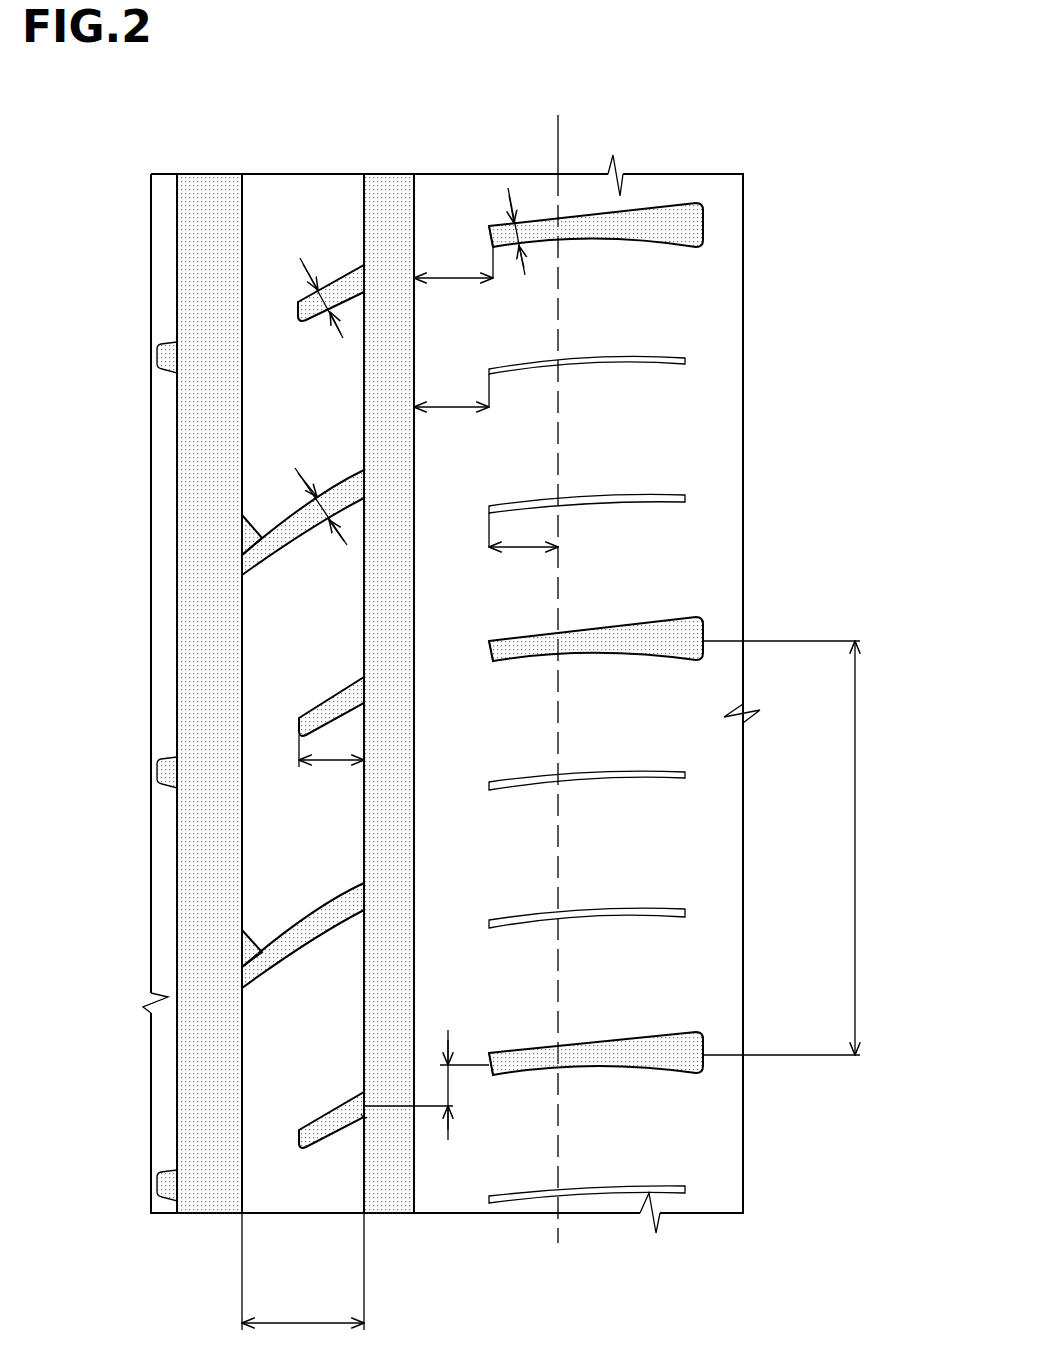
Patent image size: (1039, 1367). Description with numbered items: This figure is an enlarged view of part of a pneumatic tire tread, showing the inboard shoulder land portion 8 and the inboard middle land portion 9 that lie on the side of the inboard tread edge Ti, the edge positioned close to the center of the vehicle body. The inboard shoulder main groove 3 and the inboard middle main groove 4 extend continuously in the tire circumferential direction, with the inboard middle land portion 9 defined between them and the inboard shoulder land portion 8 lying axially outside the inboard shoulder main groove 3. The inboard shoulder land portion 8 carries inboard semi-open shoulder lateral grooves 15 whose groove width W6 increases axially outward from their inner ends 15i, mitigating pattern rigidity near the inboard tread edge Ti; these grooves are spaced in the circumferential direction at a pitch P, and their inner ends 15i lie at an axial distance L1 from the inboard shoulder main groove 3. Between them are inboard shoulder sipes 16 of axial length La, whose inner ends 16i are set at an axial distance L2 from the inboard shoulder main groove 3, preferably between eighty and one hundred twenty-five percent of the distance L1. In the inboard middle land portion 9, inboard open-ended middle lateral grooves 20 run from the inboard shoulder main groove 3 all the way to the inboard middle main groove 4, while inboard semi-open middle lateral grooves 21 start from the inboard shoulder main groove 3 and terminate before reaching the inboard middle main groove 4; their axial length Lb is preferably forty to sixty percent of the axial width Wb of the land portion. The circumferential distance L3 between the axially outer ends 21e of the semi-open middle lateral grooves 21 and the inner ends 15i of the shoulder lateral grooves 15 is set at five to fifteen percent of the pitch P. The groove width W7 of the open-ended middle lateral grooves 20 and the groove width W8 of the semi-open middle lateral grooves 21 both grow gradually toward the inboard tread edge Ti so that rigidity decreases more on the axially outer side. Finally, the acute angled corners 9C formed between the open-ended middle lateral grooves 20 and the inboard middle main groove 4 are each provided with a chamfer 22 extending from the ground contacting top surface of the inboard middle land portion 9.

The inboard shoulder main groove 3 is at (390, 230).
The inboard middle main groove 4 is at (211, 230).
The inboard shoulder land portion 8 is at (457, 210).
The inboard middle land portion 9 is at (327, 230).
The acute angled corner 9C is at (258, 933).
The inboard semi-open shoulder lateral groove 15 is at (543, 636).
The inner end of inboard semi-open shoulder lateral groove 15i is at (492, 236).
The inboard shoulder sipe 16 is at (522, 783).
The inner end of inboard shoulder sipe 16i is at (487, 372).
The inboard open-ended middle lateral groove 20 is at (303, 522).
The inboard semi-open middle lateral groove 21 is at (328, 1122).
The axially outer end of inboard semi-open middle lateral groove 21e is at (367, 1110).
The chamfer 22 is at (250, 536).
The inboard tread edge Ti is at (558, 147).
The pitch P is at (793, 848).
The axial distance L1 is at (453, 277).
The axial distance L2 is at (452, 403).
The circumferential distance L3 is at (449, 1086).
The axial length La is at (523, 548).
The axial length Lb is at (332, 762).
The groove width W6 is at (555, 237).
The groove width W7 is at (328, 500).
The groove width W8 is at (322, 295).
The axial width Wb is at (303, 1286).